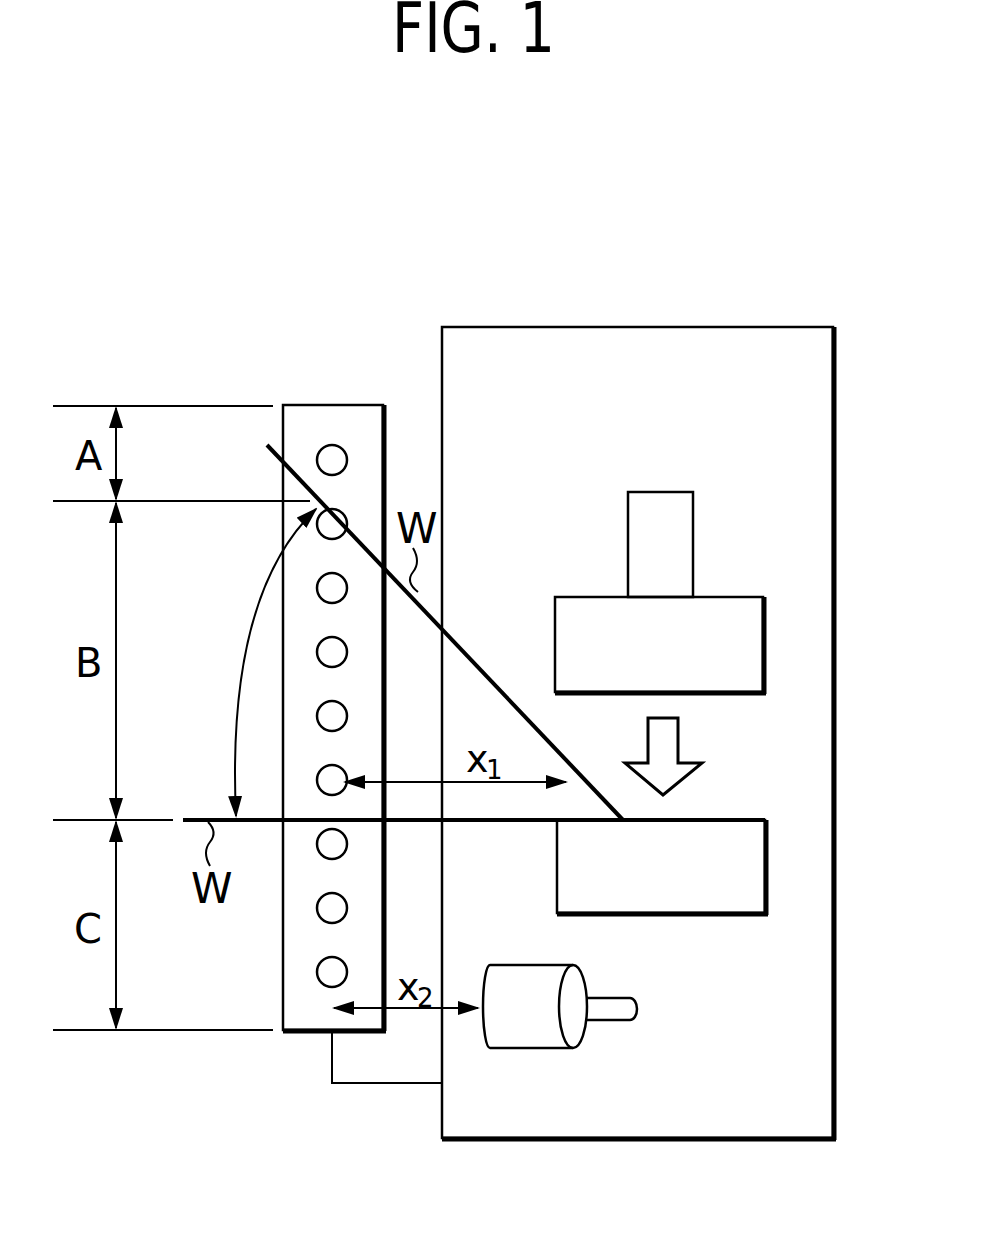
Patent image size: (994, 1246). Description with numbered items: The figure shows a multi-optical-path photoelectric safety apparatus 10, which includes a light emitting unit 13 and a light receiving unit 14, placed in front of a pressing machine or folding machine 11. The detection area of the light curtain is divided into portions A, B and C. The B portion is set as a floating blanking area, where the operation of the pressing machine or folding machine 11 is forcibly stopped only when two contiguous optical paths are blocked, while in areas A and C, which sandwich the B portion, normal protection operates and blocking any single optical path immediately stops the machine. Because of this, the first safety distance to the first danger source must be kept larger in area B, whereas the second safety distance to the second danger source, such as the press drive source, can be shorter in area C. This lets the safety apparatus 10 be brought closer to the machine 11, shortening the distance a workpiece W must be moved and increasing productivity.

The multi-optical-path photoelectric safety apparatus 10 is at (408, 668).
The light emitting unit 13 is at (362, 744).
The light receiving unit 14 is at (362, 744).
The pressing machine or folding machine 11 is at (820, 368).